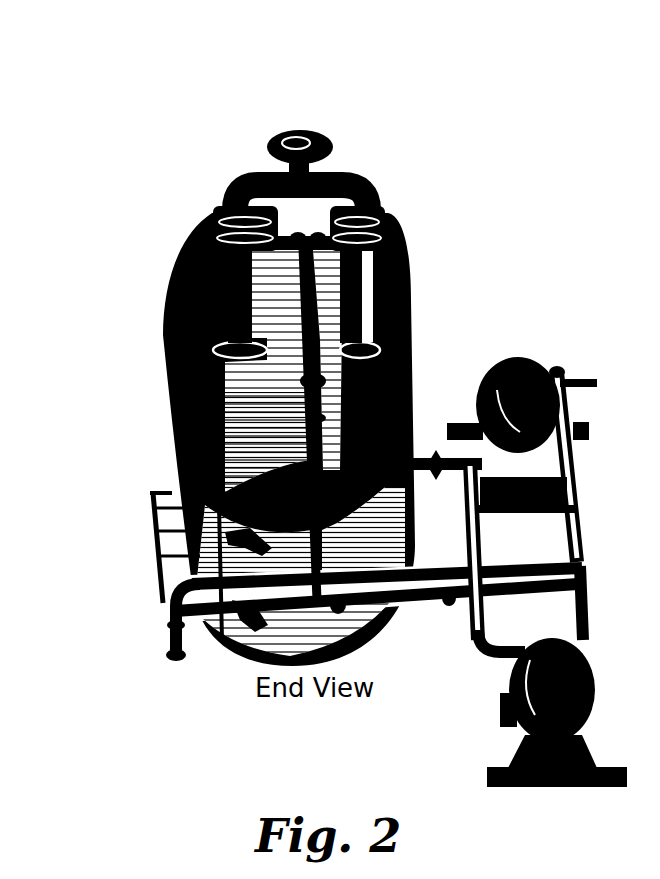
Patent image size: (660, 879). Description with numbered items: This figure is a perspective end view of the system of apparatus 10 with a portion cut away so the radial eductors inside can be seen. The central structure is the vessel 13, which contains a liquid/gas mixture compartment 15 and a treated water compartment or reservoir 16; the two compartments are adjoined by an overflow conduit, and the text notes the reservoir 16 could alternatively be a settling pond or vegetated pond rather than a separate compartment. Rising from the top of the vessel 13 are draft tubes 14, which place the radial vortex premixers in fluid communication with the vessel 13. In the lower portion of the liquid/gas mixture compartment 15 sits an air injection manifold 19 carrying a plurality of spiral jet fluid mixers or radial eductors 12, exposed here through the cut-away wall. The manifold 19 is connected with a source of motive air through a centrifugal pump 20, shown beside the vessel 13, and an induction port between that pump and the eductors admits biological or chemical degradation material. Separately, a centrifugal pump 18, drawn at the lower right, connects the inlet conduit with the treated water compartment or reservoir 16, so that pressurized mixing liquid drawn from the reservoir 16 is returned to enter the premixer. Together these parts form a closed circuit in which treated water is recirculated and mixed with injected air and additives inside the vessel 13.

The treatment system 10 is at (384, 458).
The radial eductors 12 is at (250, 557).
The vessel 13 is at (407, 331).
The draft tubes 14 is at (226, 296).
The liquid/gas mixture compartment 15 is at (360, 635).
The treated water compartment or reservoir 16 is at (185, 222).
The centrifugal pump 18 is at (594, 678).
The air injection manifold 19 is at (244, 637).
The centrifugal pump 20 is at (522, 358).